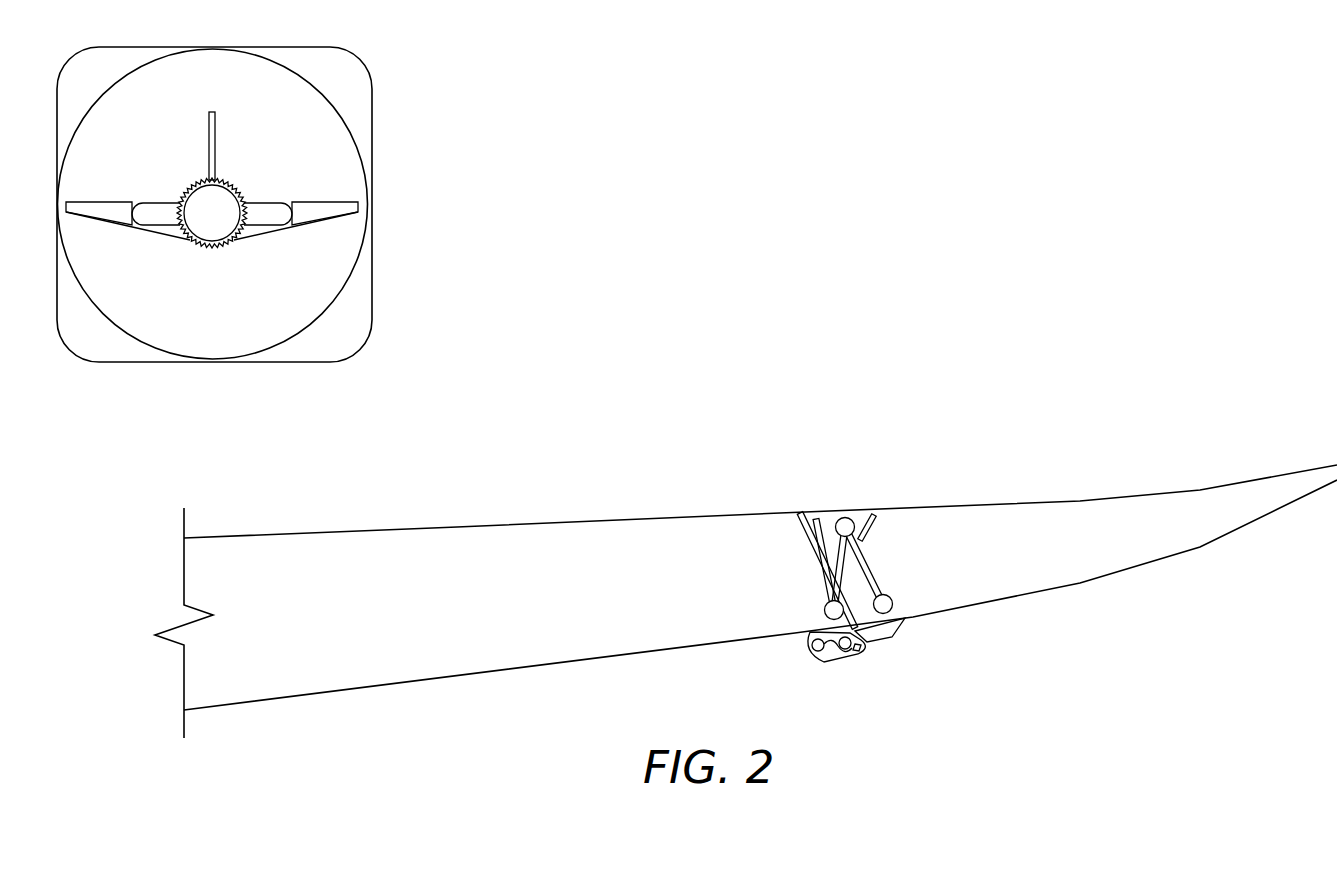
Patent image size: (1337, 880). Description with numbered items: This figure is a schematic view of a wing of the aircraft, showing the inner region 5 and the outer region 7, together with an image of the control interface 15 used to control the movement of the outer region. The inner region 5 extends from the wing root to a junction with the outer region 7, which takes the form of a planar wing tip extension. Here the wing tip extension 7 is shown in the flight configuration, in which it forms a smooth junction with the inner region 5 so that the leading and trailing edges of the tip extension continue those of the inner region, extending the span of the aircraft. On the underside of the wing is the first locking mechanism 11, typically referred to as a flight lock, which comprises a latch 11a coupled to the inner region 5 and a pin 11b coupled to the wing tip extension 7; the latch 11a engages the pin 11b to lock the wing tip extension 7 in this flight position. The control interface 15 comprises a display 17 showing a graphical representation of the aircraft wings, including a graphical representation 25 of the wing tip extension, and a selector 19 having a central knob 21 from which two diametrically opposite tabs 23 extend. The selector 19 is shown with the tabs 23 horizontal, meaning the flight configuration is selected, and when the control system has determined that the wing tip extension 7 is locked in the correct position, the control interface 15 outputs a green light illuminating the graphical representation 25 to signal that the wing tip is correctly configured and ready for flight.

The inner region 5 is at (455, 536).
The outer region 7 is at (1105, 505).
The first locking mechanism 11 is at (838, 622).
The latch 11a is at (810, 656).
The pin 11b is at (860, 652).
The control interface 15 is at (408, 100).
The display 17 is at (212, 204).
The selector 19 is at (199, 183).
The central knob 21 is at (215, 236).
The tabs 23 is at (158, 221).
The graphical representation of the wing tip extension 25 is at (108, 201).